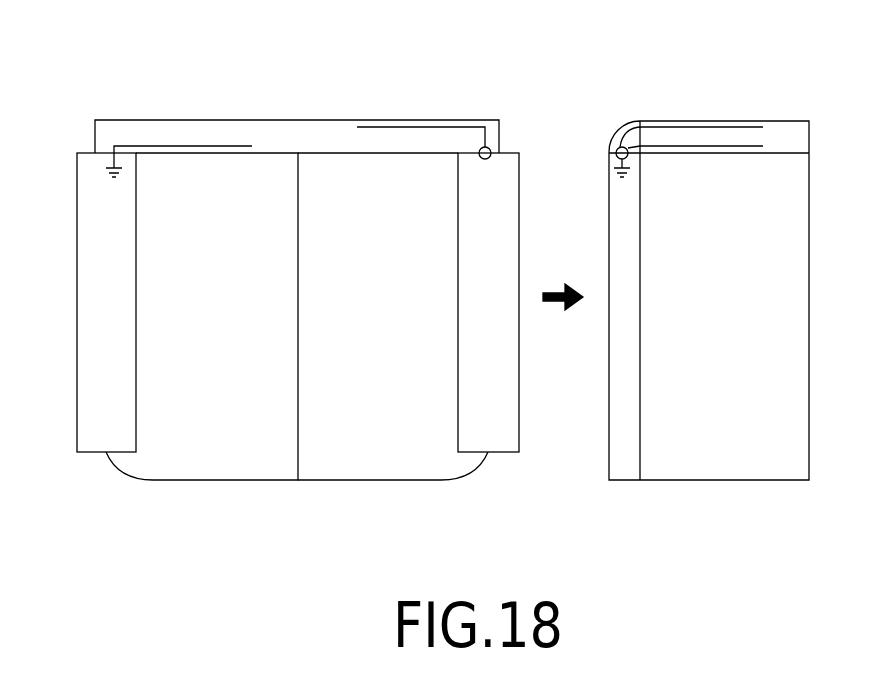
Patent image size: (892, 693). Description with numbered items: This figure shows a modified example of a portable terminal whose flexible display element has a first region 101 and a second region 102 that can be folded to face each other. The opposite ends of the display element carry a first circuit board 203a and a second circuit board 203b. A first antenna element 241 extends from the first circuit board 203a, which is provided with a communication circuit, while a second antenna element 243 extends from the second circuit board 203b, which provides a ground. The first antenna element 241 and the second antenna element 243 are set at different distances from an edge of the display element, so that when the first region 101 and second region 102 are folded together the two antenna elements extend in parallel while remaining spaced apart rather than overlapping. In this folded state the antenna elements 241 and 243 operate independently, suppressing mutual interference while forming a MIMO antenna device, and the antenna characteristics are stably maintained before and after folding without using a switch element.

The first region 101 is at (403, 455).
The second region 102 is at (197, 455).
The first circuit board 203a is at (500, 443).
The second circuit board 203b is at (96, 443).
The first antenna element 241 is at (416, 127).
The second antenna element 243 is at (176, 145).